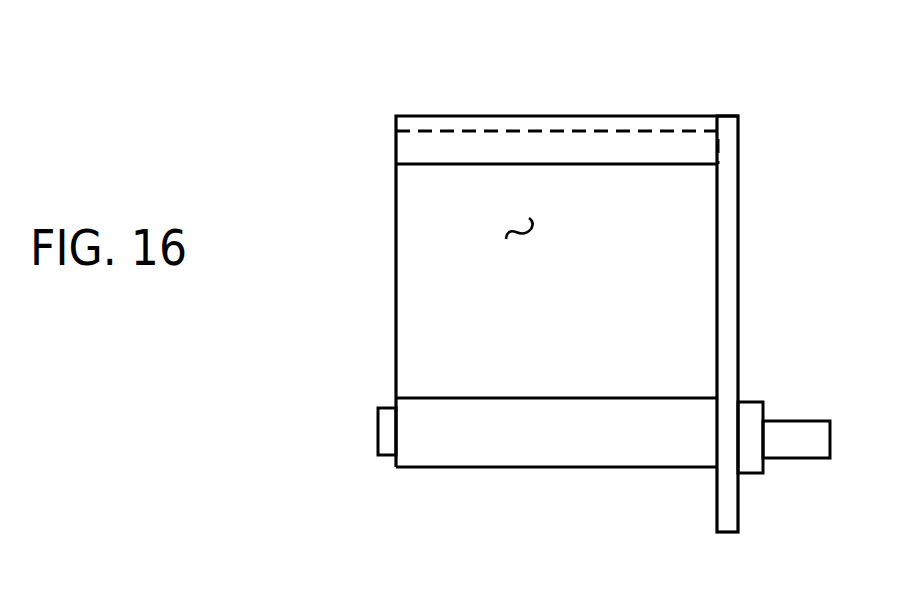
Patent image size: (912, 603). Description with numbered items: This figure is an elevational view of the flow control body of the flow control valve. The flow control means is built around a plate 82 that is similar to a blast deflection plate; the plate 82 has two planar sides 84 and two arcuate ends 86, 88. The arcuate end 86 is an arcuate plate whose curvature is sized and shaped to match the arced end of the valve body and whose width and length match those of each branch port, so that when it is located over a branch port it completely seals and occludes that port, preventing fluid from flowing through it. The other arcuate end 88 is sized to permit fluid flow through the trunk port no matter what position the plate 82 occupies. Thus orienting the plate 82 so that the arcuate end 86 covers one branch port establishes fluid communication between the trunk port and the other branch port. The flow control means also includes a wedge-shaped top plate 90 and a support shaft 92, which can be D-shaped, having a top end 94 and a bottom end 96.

The plate 82 is at (391, 242).
The planar side 84 is at (524, 224).
The arcuate end 86 is at (549, 116).
The arcuate end 88 is at (628, 470).
The wedge-shaped top plate 90 is at (712, 483).
The support shaft 92 is at (530, 470).
The top end 94 is at (808, 416).
The bottom end 96 is at (376, 430).